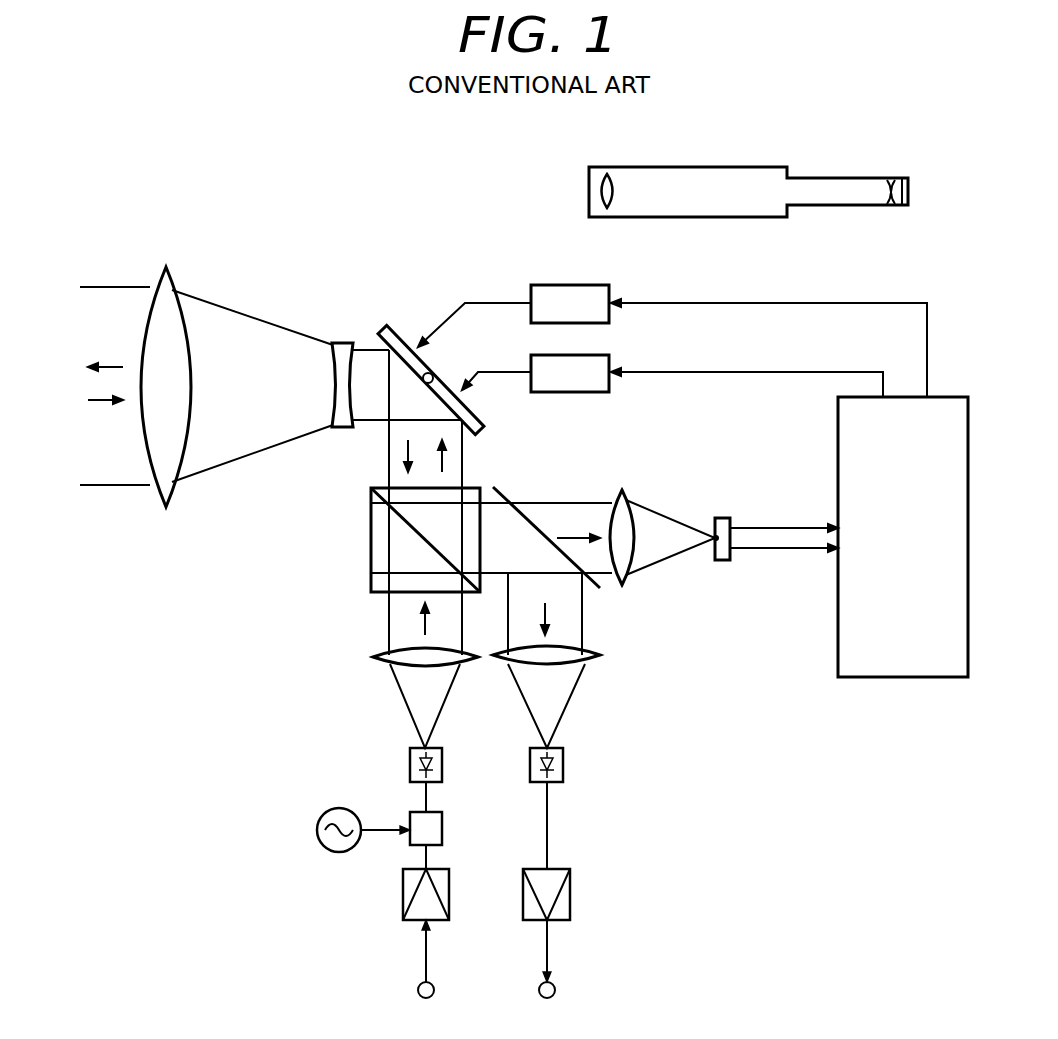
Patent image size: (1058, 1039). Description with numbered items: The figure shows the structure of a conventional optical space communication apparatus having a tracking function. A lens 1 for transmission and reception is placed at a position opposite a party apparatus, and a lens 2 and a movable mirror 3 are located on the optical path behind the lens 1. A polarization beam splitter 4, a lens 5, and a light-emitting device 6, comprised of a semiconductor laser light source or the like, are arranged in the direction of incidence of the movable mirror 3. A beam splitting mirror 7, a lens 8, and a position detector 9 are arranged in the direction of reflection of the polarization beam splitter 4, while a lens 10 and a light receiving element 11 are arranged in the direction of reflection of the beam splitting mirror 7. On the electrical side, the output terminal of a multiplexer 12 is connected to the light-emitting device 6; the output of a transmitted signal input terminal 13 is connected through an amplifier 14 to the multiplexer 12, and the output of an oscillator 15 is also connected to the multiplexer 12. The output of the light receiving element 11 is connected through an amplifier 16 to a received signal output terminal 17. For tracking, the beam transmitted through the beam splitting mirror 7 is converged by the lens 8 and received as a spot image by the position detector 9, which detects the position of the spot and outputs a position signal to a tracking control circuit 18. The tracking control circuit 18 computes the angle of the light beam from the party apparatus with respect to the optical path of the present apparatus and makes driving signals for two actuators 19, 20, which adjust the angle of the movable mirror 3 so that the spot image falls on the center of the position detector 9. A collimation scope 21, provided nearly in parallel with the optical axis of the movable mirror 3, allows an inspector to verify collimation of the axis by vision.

The lens 1 is at (170, 278).
The lens 2 is at (341, 343).
The movable mirror 3 is at (390, 330).
The polarization beam splitter 4 is at (371, 515).
The lens 5 is at (378, 656).
The light-emitting device 6 is at (410, 765).
The beam splitting mirror 7 is at (500, 488).
The lens 8 is at (624, 490).
The position detector 9 is at (722, 518).
The lens 10 is at (600, 657).
The light receiving element 11 is at (563, 765).
The multiplexer 12 is at (410, 815).
The transmitted signal input terminal 13 is at (418, 988).
The amplifier 14 is at (403, 882).
The oscillator 15 is at (322, 815).
The amplifier 16 is at (570, 882).
The received signal output terminal 17 is at (555, 988).
The tracking control circuit 18 is at (940, 397).
The actuator 19 is at (590, 285).
The actuator 20 is at (565, 392).
The collimation scope 21 is at (755, 167).